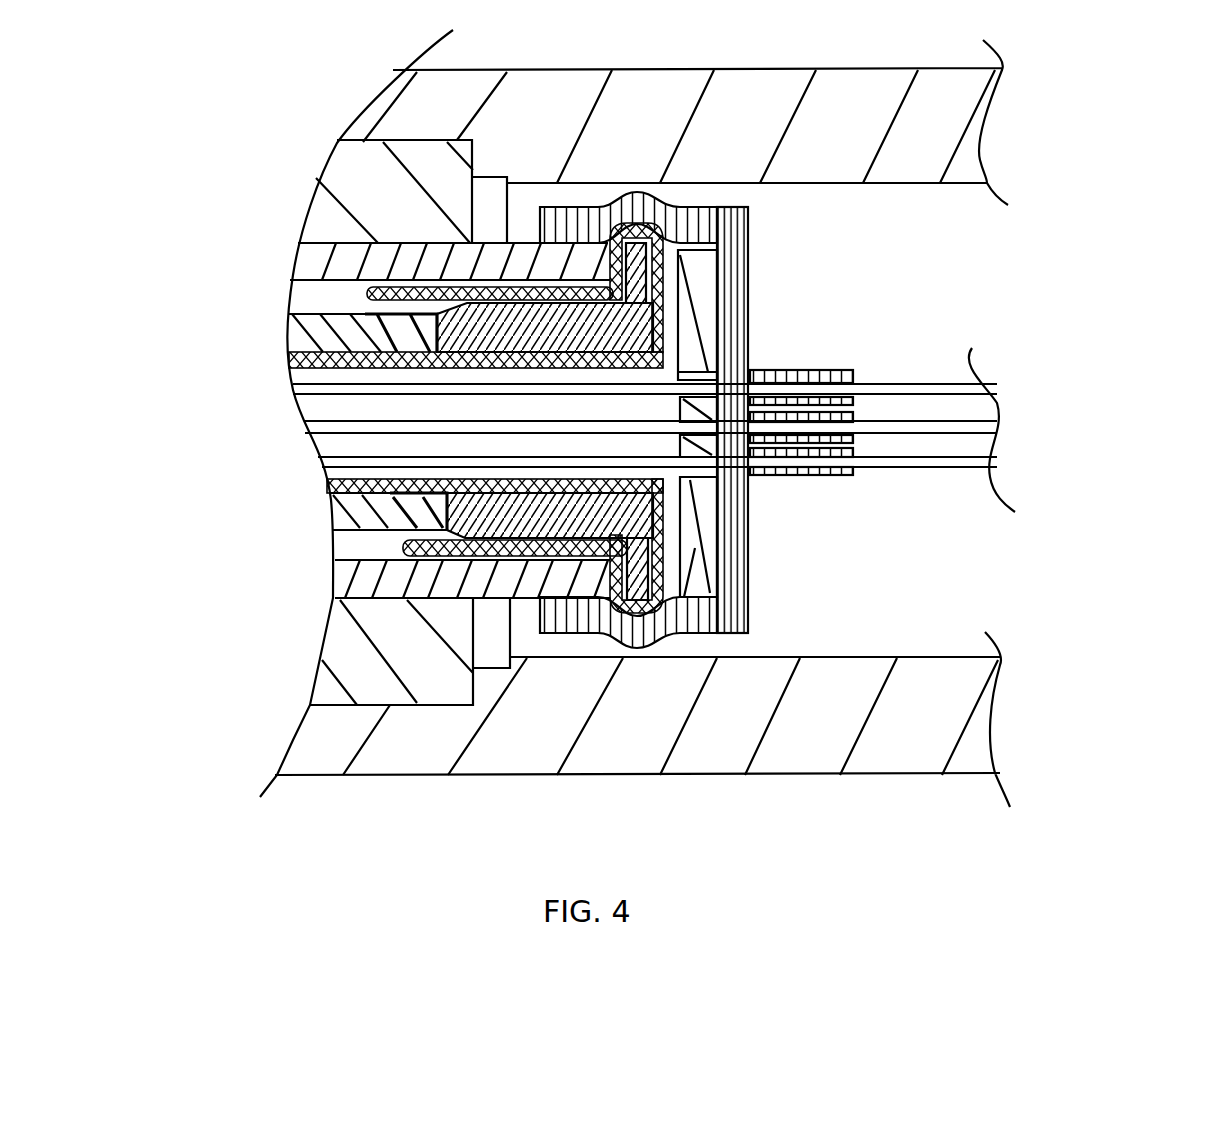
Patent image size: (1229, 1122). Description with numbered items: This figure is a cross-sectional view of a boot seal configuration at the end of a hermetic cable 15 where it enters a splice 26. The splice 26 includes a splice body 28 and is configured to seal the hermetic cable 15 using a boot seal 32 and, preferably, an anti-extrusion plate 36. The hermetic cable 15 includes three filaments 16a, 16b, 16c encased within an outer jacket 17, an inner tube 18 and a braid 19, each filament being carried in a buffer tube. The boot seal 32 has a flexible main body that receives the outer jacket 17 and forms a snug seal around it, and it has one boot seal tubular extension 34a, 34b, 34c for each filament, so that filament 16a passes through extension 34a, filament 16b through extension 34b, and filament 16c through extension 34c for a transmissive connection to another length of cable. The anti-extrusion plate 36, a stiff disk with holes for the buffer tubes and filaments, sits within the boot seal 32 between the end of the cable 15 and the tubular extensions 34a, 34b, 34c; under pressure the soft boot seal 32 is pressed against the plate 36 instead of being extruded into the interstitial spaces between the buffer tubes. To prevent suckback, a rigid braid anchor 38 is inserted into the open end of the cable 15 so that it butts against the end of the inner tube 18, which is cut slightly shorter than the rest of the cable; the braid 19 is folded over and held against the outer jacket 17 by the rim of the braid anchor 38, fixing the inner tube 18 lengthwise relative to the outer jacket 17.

The hermetic cable 15 is at (318, 506).
The filament 16a is at (938, 390).
The filament 16b is at (980, 427).
The filament 16c is at (973, 462).
The outer jacket 17 is at (300, 270).
The inner tube 18 is at (293, 330).
The braid 19 is at (287, 362).
The splice 26 is at (1110, 741).
The splice body 28 is at (713, 760).
The boot seal 32 is at (735, 612).
The boot seal tubular extension 34a is at (850, 370).
The boot seal tubular extension 34b is at (855, 415).
The boot seal tubular extension 34c is at (832, 475).
The anti-extrusion plate 36 is at (700, 550).
The braid anchor 38 is at (640, 300).